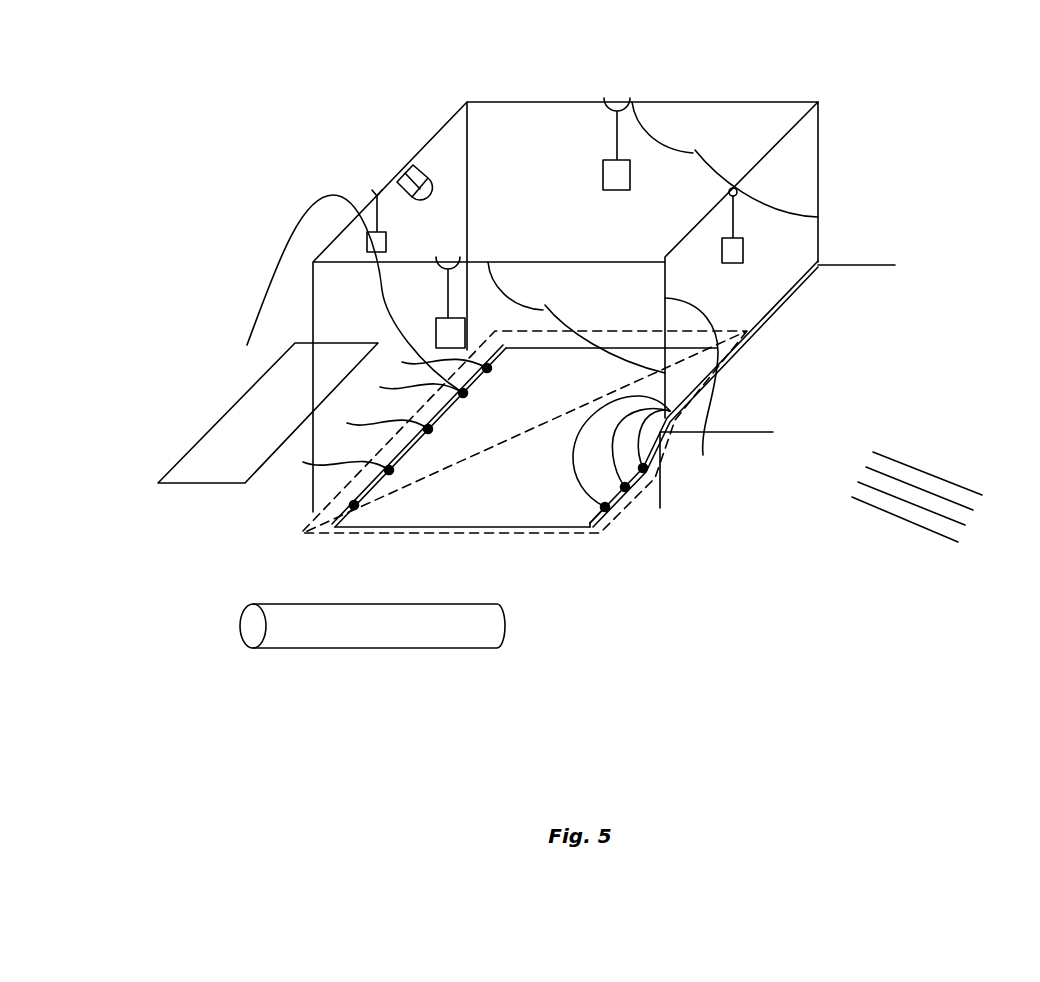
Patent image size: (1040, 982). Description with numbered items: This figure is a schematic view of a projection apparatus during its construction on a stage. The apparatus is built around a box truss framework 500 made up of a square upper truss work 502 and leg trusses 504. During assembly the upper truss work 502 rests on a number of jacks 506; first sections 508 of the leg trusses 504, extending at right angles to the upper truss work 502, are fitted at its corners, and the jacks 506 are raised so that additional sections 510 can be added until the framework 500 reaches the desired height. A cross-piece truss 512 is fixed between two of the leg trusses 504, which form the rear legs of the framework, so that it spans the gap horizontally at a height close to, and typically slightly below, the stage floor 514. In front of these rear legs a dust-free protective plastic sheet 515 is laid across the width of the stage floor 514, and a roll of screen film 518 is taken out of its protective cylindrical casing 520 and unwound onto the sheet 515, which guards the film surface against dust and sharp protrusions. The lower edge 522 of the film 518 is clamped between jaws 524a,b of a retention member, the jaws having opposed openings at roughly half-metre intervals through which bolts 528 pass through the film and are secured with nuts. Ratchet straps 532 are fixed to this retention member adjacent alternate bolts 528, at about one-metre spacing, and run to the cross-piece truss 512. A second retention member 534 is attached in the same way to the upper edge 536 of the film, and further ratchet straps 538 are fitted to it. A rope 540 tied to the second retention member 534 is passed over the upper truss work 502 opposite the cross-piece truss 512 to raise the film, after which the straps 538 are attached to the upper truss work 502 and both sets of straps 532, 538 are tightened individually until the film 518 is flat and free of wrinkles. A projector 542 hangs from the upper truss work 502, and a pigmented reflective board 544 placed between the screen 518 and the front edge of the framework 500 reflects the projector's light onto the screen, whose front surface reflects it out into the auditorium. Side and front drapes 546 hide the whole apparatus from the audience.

The box truss framework 500 is at (377, 193).
The upper truss work 502 is at (530, 98).
The leg trusses 504 is at (703, 455).
The jacks 506 is at (603, 170).
The first sections 508 is at (820, 148).
The additional sections 510 is at (820, 240).
The cross-piece truss 512 is at (790, 297).
The stage floor 514 is at (762, 366).
The protective plastic sheet 515 is at (305, 529).
The screen film 518 is at (507, 497).
The protective cylindrical casing 520 is at (322, 637).
The lower edge 522 is at (590, 518).
The jaws 524a,b is at (598, 515).
The bolts 528 is at (573, 457).
The ratchet straps 532 is at (623, 505).
The second retention member 534 is at (348, 520).
The upper edge 536 is at (356, 505).
The ratchet straps 538 is at (353, 505).
The rope 540 is at (260, 307).
The projector 542 is at (397, 172).
The pigmented reflective board 544 is at (245, 427).
The drapes 546 is at (718, 113).